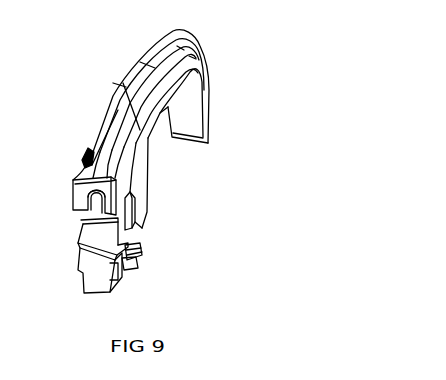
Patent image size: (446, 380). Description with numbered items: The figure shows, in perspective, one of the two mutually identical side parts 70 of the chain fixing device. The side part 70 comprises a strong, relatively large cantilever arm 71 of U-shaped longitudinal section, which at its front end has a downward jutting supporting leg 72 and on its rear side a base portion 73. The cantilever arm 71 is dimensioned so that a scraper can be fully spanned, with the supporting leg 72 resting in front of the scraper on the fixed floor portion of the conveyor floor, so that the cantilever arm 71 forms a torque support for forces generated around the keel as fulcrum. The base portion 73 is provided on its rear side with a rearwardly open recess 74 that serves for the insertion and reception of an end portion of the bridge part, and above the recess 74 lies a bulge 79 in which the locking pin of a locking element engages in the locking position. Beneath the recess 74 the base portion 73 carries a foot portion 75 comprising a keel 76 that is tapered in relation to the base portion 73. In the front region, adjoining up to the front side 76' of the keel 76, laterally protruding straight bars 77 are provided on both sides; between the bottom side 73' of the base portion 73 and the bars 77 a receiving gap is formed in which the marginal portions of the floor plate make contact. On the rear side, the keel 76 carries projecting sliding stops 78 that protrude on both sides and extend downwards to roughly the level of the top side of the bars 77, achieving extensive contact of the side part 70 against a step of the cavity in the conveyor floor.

The side part 70 is at (255, 177).
The cantilever arm 71 is at (131, 98).
The supporting leg 72 is at (198, 117).
The base portion 73 is at (90, 139).
The bottom side of the base portion 73' is at (157, 211).
The recess 74 is at (81, 220).
The foot portion 75 is at (93, 270).
The keel 76 is at (141, 285).
The front side of the keel 76' is at (168, 226).
The bars 77 is at (147, 253).
The sliding stops 78 is at (78, 262).
The bulge 79 is at (90, 197).